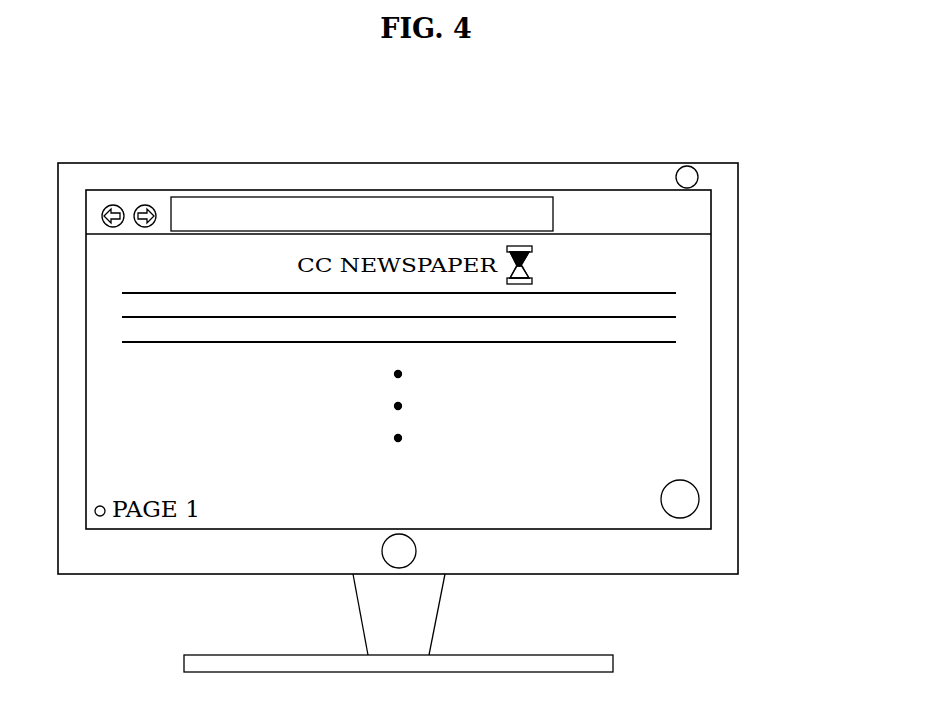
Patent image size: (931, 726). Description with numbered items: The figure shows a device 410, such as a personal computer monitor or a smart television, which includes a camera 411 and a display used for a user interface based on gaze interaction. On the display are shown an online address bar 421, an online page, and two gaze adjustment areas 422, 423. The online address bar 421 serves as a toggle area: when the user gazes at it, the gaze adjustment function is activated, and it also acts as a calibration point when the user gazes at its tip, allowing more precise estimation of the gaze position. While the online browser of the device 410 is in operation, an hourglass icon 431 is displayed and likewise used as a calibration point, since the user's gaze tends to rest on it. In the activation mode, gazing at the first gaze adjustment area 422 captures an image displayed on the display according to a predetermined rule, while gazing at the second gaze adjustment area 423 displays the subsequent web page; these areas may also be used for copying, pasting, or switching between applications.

The device 410 is at (716, 163).
The camera 411 is at (677, 177).
The online address bar 421 is at (356, 197).
The first gaze adjustment area 422 is at (680, 480).
The second gaze adjustment area 423 is at (100, 505).
The hourglass icon 431 is at (534, 261).